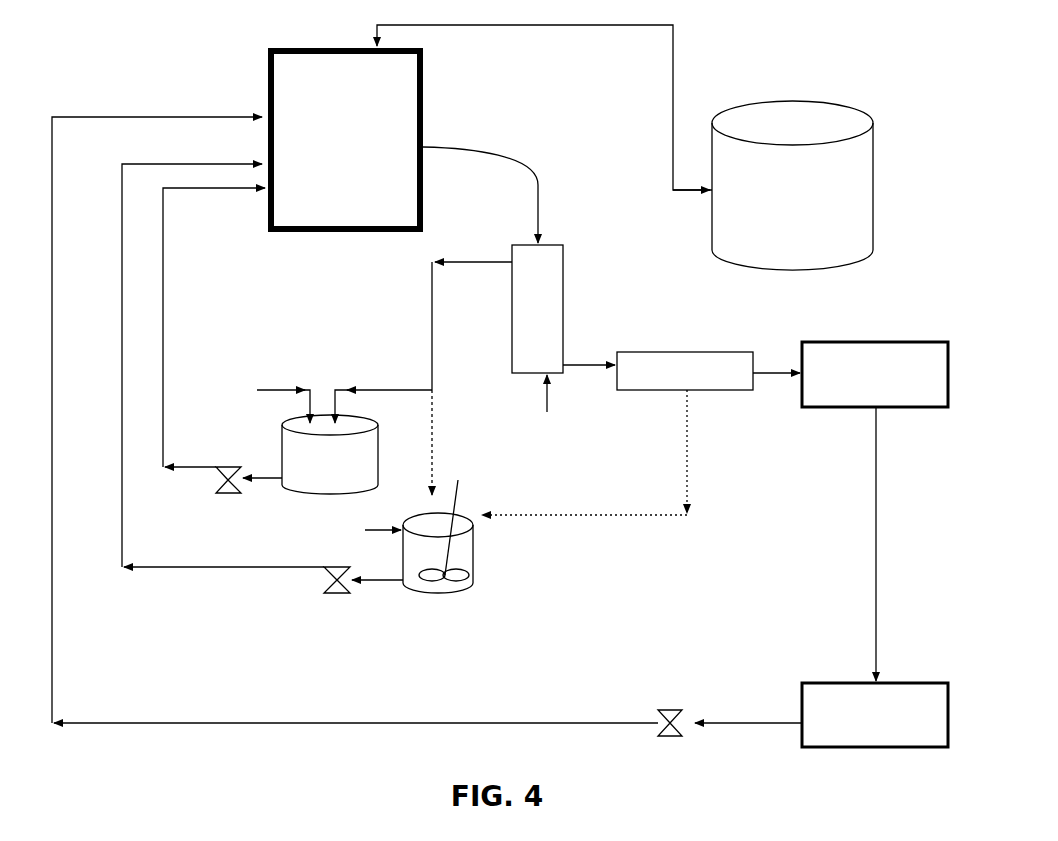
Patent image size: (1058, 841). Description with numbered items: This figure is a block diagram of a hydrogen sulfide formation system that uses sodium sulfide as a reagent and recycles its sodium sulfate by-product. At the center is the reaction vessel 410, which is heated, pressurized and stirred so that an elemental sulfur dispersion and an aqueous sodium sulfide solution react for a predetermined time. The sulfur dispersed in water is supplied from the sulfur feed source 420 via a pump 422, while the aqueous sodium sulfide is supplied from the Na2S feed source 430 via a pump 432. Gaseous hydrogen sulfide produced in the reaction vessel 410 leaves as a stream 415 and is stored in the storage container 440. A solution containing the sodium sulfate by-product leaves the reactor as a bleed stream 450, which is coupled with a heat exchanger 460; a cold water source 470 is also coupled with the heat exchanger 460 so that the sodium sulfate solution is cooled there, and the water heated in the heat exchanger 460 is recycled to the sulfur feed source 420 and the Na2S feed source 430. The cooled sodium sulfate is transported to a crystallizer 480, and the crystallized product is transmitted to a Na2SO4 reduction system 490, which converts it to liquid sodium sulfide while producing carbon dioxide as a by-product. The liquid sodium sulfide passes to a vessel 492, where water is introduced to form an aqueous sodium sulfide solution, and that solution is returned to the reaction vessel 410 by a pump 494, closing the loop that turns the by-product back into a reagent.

The reaction vessel 410 is at (345, 140).
The stream 415 is at (544, 95).
The sulfur feed source 420 is at (489, 577).
The pump 422 is at (316, 604).
The Na2S feed source 430 is at (314, 397).
The pump 432 is at (220, 507).
The storage container 440 is at (792, 185).
The bleed stream 450 is at (481, 186).
The heat exchanger 460 is at (574, 297).
The cold water source 470 is at (542, 411).
The crystallizer 480 is at (690, 342).
The Na2SO4 reduction system 490 is at (875, 511).
The vessel 492 is at (821, 715).
The pump 494 is at (680, 696).